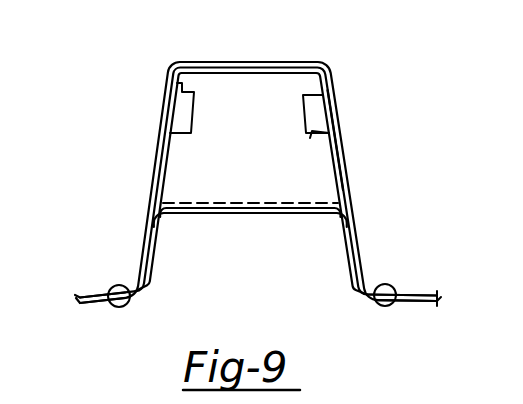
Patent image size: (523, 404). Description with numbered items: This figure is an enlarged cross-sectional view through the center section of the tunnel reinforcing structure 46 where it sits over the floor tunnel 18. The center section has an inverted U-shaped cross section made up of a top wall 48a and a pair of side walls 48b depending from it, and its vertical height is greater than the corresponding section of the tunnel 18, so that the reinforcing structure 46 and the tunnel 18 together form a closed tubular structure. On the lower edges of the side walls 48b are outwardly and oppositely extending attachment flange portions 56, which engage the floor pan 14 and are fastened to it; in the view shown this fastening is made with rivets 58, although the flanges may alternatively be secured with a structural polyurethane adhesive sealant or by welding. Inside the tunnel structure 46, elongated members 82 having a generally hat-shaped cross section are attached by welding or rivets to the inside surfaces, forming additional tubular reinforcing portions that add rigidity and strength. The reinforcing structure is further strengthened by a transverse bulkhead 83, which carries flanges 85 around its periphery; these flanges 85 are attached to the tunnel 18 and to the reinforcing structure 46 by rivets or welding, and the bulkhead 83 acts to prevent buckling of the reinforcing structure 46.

The floor pan 14 is at (424, 297).
The tunnel 18 is at (238, 203).
The reinforcing structure 46 is at (285, 60).
The top wall 48a is at (204, 62).
The side walls 48b is at (166, 112).
The flange portions 56 is at (108, 293).
The rivets 58 is at (121, 284).
The elongated members 82 is at (303, 108).
The transverse bulkhead 83 is at (334, 130).
The flanges 85 is at (342, 163).